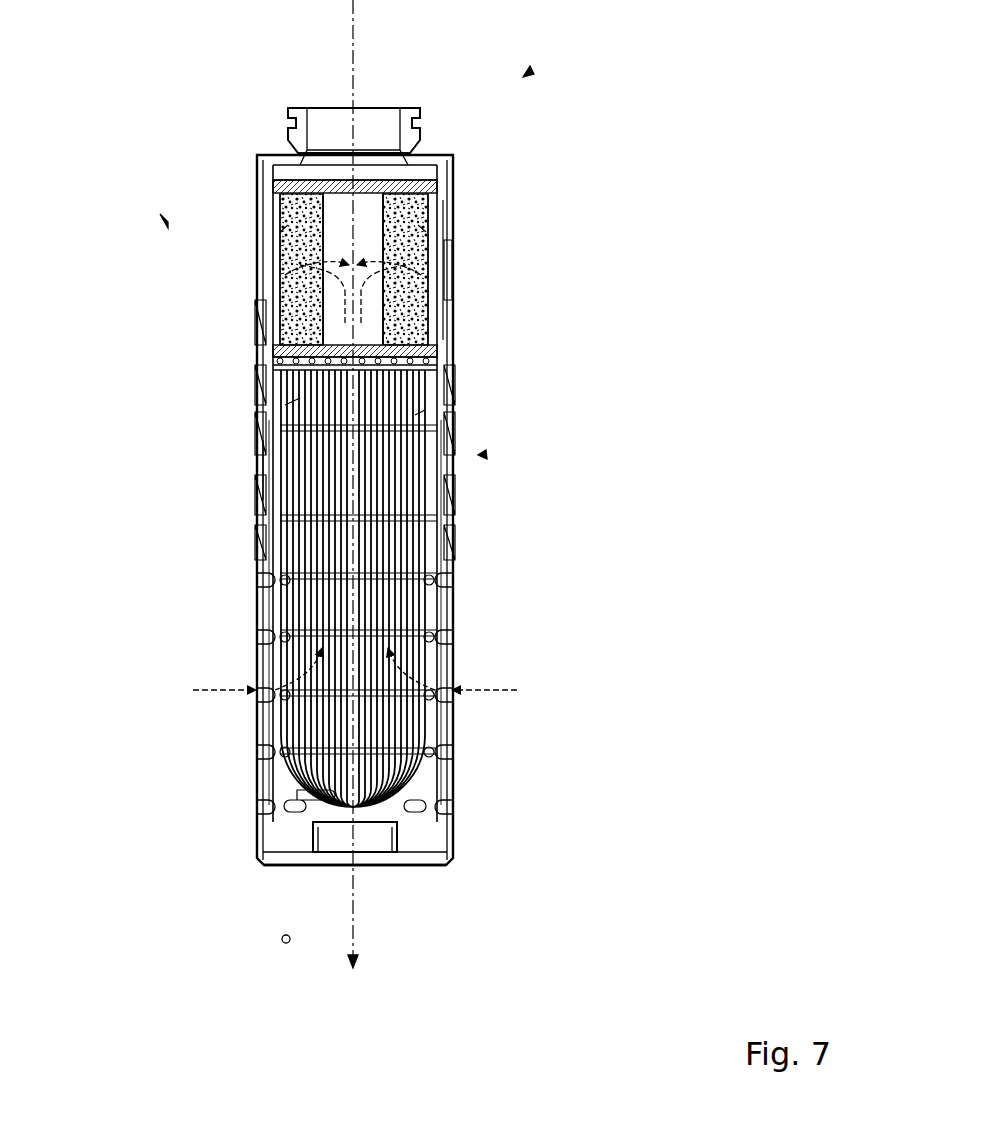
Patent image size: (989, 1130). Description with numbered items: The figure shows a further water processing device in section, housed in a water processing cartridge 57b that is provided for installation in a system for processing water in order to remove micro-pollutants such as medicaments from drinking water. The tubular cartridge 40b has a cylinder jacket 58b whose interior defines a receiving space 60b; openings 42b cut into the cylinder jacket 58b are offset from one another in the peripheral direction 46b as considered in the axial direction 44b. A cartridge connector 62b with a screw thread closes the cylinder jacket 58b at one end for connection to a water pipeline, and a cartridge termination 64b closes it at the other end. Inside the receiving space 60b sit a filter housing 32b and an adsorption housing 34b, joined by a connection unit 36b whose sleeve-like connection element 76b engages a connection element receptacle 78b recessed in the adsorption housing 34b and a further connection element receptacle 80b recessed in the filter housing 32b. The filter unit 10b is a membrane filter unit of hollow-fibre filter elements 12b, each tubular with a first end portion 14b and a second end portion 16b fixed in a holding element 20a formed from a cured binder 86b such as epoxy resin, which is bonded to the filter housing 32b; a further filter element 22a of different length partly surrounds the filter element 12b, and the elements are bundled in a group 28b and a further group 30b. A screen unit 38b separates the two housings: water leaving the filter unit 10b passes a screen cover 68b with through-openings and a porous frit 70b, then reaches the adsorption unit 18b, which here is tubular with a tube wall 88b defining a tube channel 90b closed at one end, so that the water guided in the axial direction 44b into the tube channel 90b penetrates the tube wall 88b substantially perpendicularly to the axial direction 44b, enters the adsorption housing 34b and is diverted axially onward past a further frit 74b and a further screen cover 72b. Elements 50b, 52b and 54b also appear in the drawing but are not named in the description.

The filter unit 10b is at (404, 510).
The filter element 12b is at (447, 745).
The first end portion 14b is at (420, 395).
The second end portion 16b is at (266, 410).
The adsorption unit 18b is at (450, 277).
The holding element 20a is at (487, 454).
The further filter element 22a is at (447, 627).
The group of filter elements 28b is at (392, 650).
The further group of further filter elements 30b is at (300, 612).
The filter housing 32b is at (262, 468).
The adsorption housing 34b is at (450, 242).
The connection unit 36b is at (262, 374).
The screen unit 38b is at (165, 221).
The cartridge 40b is at (453, 442).
The openings 42b is at (458, 580).
The axial direction 44b is at (355, 890).
The peripheral direction 46b is at (282, 939).
The filter wall 50b is at (262, 200).
The central tube 52b is at (300, 214).
The wall gap 54b is at (447, 302).
The water processing cartridge 57b is at (525, 75).
The cylinder jacket 58b is at (453, 505).
The receiving space 60b is at (297, 808).
The cartridge connector 62b is at (452, 160).
The cartridge termination 64b is at (455, 863).
The screen cover 68b is at (447, 366).
The frit 70b is at (447, 352).
The further screen cover 72b is at (447, 185).
The further frit 74b is at (447, 197).
The connection element 76b is at (262, 392).
The connection element receptacle 78b is at (262, 313).
The further connection element receptacle 80b is at (268, 400).
The binder 86b is at (450, 410).
The tube wall 88b is at (262, 243).
The tube channel 90b is at (262, 281).